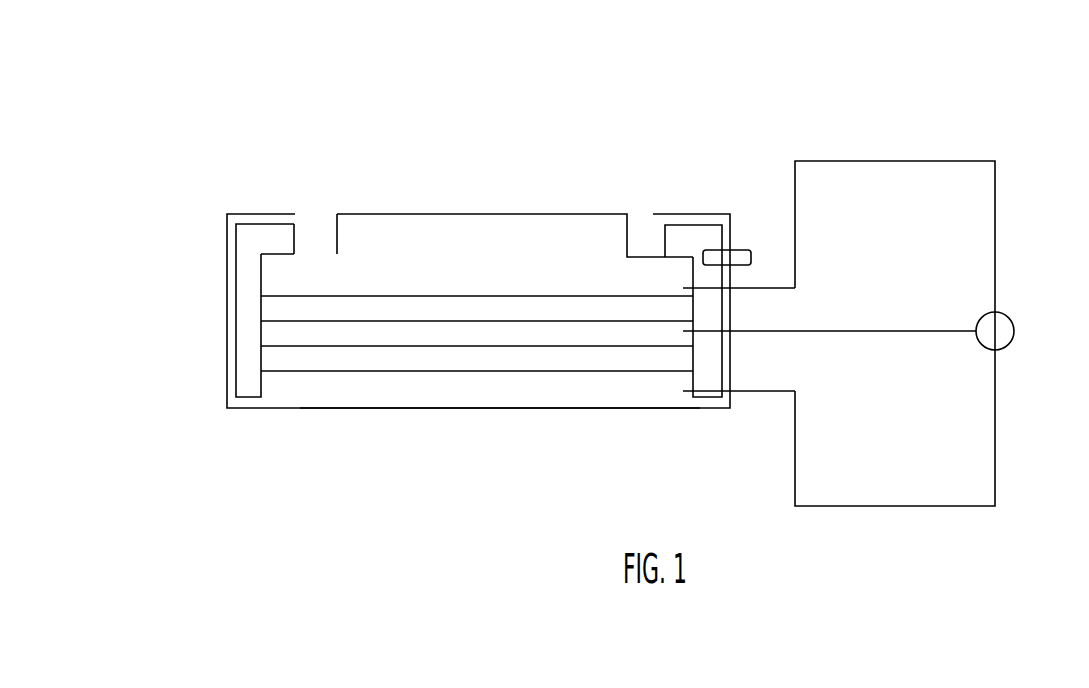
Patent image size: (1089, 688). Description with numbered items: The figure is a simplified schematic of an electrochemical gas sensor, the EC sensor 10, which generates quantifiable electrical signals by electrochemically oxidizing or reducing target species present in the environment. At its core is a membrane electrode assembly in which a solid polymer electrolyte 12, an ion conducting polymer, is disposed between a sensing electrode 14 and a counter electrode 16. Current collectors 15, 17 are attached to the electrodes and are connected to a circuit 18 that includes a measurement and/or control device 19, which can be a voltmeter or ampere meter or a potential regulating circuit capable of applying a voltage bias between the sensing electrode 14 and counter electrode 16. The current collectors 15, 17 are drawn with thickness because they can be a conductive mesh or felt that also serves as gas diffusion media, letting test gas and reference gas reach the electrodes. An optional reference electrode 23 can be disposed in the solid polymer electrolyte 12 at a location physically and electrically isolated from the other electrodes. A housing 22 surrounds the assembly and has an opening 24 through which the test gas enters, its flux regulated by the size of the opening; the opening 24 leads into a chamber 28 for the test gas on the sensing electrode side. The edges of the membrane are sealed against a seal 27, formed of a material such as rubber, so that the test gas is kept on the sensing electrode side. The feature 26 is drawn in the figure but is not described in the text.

The EC sensor 10 is at (778, 112).
The solid polymer electrolyte 12 is at (249, 333).
The sensing electrode 14 is at (249, 306).
The current collector 15 is at (264, 273).
The counter electrode 16 is at (249, 358).
The current collector 17 is at (479, 412).
The circuit 18 is at (915, 507).
The measurement and/or control device 19 is at (1000, 350).
The housing 22 is at (256, 212).
The reference electrode 23 is at (656, 333).
The opening 24 is at (471, 213).
The gap 26 is at (318, 226).
The seal 27 is at (700, 236).
The chamber 28 is at (535, 232).